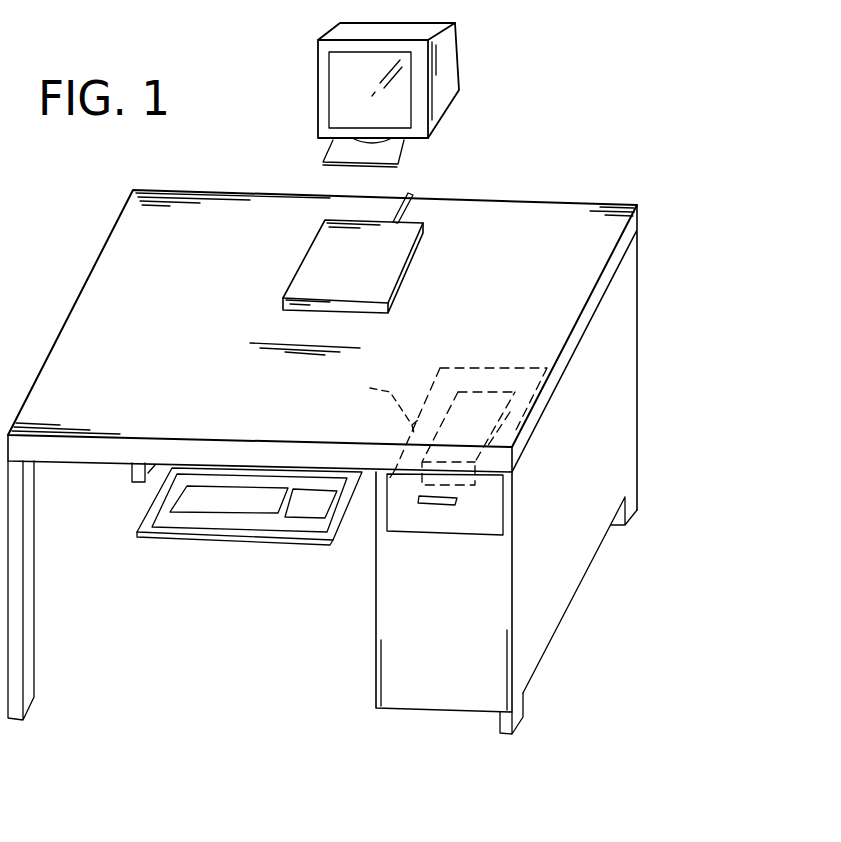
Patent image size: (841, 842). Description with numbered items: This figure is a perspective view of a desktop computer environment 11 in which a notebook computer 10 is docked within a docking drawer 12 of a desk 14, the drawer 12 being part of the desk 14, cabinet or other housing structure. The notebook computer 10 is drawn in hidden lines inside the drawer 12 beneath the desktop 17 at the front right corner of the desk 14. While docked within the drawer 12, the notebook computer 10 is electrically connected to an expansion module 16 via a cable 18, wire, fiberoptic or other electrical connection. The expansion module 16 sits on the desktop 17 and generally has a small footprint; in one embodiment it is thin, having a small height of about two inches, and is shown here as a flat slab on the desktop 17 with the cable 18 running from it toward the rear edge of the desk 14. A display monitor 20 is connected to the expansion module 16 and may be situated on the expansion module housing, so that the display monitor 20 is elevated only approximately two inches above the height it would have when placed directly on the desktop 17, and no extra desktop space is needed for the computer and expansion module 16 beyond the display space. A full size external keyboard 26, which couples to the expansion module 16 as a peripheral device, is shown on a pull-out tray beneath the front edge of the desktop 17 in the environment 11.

The notebook computer 10 is at (440, 378).
The desktop computer environment 11 is at (628, 92).
The docking drawer 12 is at (382, 404).
The desk 14 is at (352, 462).
The expansion module 16 is at (406, 264).
The desktop 17 is at (192, 316).
The cable 18 is at (411, 211).
The display monitor 20 is at (443, 64).
The full size external keyboard 26 is at (295, 525).